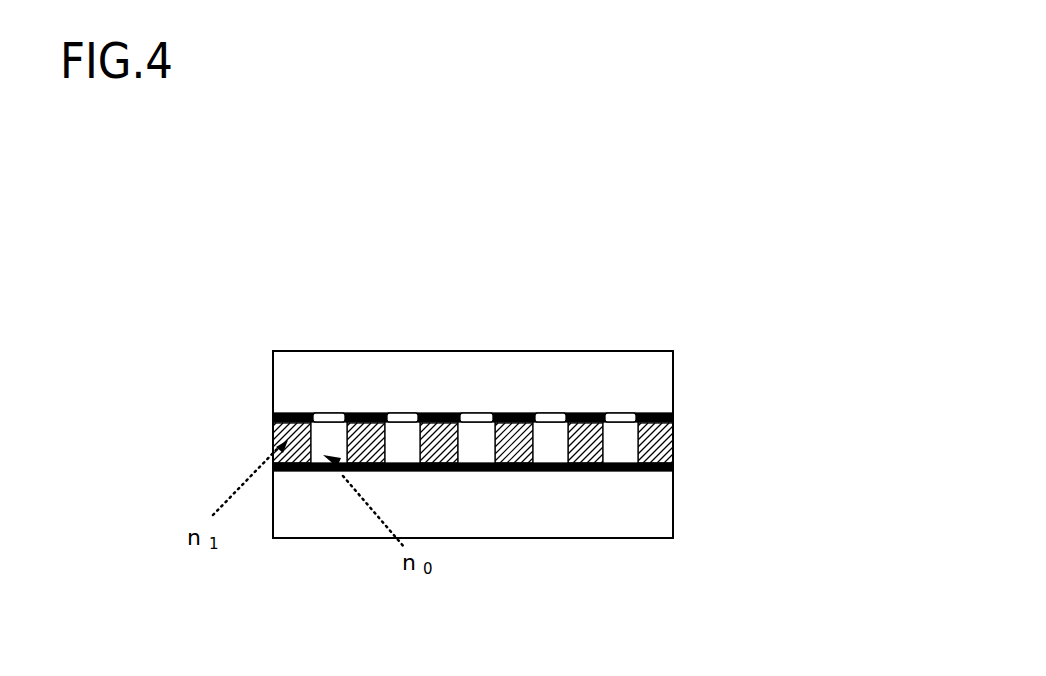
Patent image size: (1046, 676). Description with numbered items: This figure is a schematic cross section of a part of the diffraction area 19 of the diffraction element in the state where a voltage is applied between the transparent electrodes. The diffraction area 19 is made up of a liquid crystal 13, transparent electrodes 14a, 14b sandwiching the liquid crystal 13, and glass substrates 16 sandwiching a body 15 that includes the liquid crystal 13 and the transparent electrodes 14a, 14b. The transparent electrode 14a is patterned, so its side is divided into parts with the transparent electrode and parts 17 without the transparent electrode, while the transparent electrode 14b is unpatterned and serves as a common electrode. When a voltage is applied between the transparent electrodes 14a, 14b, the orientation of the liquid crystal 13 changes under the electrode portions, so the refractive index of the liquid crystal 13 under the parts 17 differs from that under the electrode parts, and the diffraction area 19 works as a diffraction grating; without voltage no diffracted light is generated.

The liquid crystal 13 is at (534, 377).
The transparent electrode 14a is at (674, 403).
The transparent electrode 14b is at (674, 468).
The body 15 is at (598, 401).
The glass substrate 16 is at (558, 351).
The part without the transparent electrode 17 is at (327, 413).
The diffraction area 19 is at (598, 421).